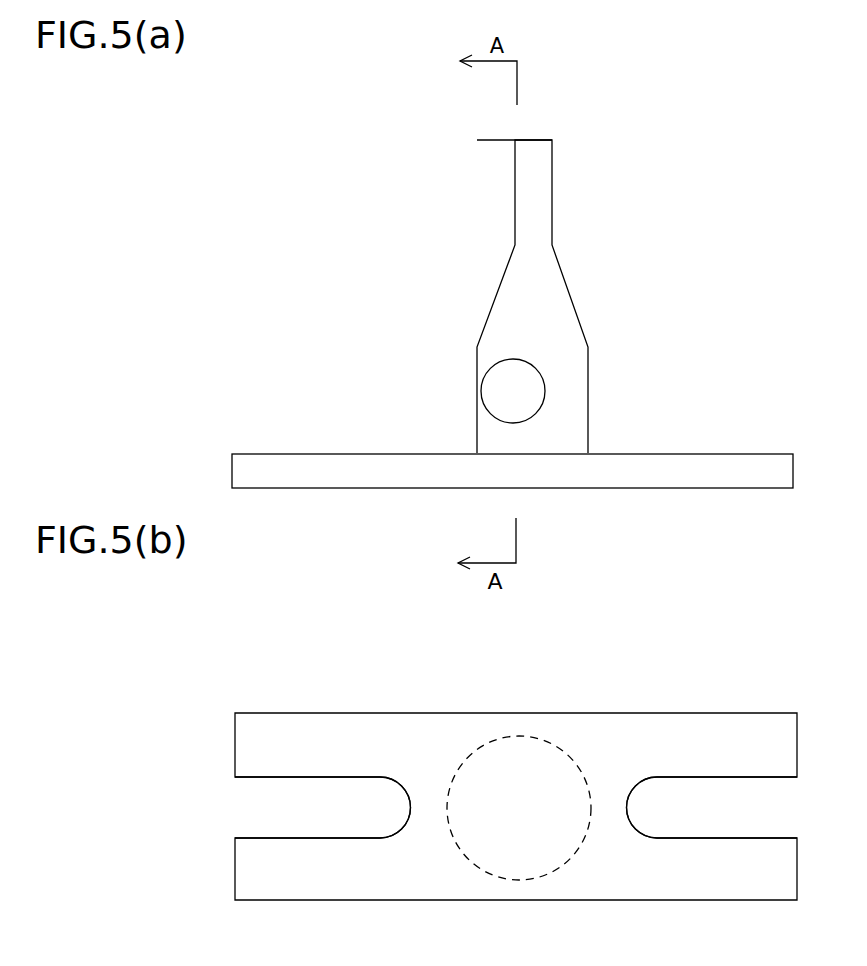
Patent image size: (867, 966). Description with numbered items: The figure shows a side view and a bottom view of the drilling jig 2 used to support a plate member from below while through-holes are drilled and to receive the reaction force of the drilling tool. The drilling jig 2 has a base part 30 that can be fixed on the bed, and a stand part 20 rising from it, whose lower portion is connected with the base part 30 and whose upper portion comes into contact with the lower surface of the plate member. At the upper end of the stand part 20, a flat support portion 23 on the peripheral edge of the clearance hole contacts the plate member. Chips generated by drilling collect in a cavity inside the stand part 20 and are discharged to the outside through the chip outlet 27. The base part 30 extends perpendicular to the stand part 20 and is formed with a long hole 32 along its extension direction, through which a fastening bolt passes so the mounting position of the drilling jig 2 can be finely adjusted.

In FIG. 5A, the drilling jig 2 is at (595, 157).
In FIG. 5A, the stand part 20 is at (553, 193).
In FIG. 5B, the stand part 20 is at (518, 737).
In FIG. 5A, the flat support portion 23 is at (480, 140).
In FIG. 5A, the chip outlet 27 is at (481, 387).
In FIG. 5A, the base part 30 is at (645, 489).
In FIG. 5B, the base part 30 is at (391, 902).
In FIG. 5B, the long hole 32 is at (312, 832).